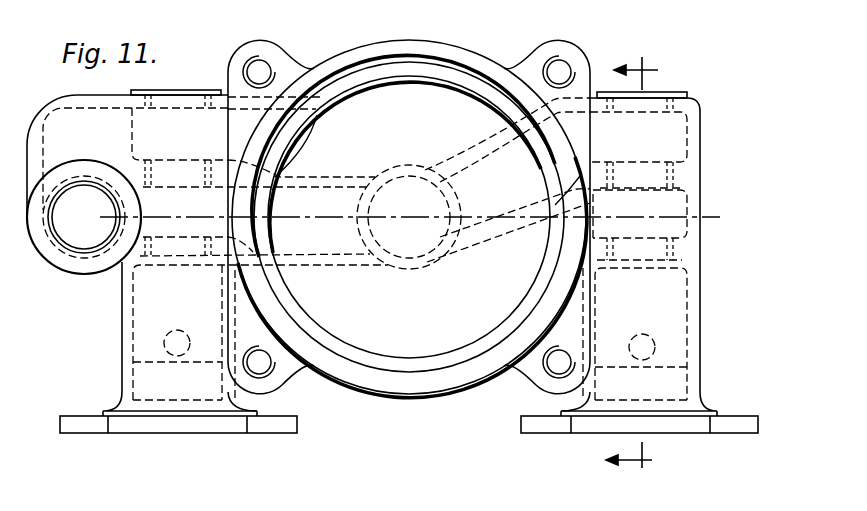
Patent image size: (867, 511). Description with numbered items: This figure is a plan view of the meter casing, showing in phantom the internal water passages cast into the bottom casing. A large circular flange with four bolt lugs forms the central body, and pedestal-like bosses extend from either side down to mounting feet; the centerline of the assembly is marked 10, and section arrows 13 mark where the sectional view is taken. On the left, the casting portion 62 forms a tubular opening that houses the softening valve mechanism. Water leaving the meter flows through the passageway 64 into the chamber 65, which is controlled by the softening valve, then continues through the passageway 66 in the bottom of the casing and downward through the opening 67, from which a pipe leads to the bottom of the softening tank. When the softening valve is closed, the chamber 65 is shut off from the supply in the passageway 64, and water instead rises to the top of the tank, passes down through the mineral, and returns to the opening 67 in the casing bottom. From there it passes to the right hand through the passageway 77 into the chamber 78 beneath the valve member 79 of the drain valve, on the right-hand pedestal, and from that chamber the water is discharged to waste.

The housing axis / shaft center line 10 is at (389, 184).
The section line 13- 13 is at (632, 265).
The casting portion 62 is at (122, 330).
The passageway 64 is at (173, 123).
The chamber 65 is at (185, 193).
The passageway 66 is at (327, 200).
The opening 67 is at (420, 247).
The passageway 77 is at (673, 123).
The chamber 78 is at (680, 202).
The valve member 79 is at (650, 255).